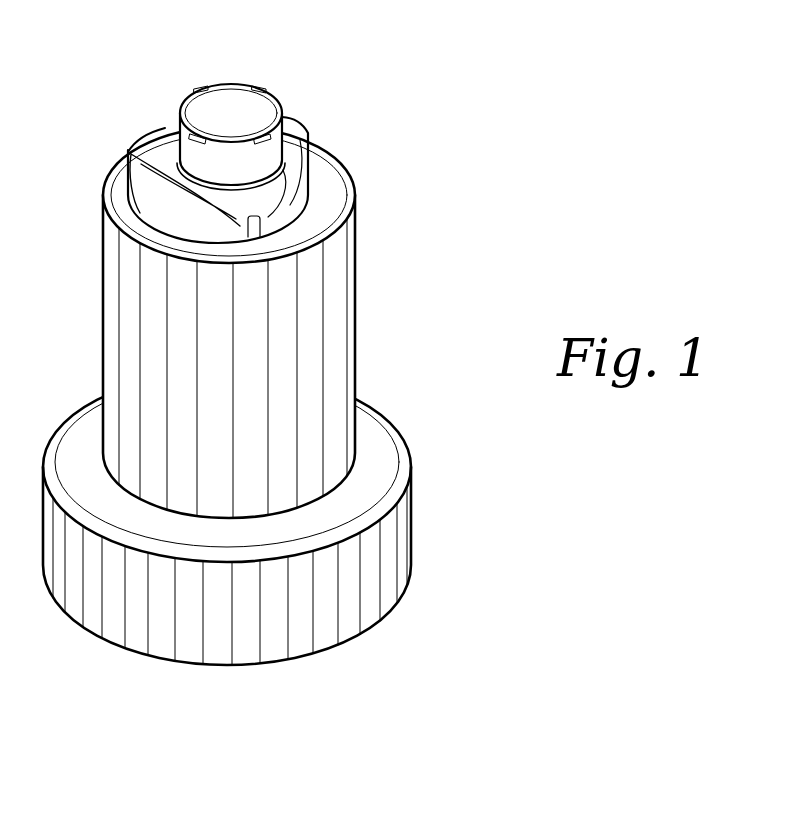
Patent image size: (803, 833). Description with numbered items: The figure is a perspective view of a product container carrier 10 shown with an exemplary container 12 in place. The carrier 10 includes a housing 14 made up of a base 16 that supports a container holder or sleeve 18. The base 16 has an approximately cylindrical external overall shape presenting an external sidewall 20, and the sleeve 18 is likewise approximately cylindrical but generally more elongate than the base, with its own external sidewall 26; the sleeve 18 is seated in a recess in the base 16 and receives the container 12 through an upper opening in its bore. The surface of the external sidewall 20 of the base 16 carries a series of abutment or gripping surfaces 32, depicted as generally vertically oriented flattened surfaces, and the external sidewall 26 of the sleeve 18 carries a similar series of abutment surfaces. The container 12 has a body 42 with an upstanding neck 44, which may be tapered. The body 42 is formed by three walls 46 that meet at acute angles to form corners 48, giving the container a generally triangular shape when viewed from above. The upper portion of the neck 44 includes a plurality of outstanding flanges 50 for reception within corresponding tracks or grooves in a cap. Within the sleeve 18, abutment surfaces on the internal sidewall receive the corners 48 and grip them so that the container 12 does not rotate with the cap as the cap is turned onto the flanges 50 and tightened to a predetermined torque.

The product container carrier 10 is at (483, 122).
The container 12 is at (298, 200).
The housing 14 is at (428, 323).
The base 16 is at (417, 495).
The sleeve 18 is at (100, 315).
The external sidewall 20 is at (413, 555).
The external sidewall 26 is at (353, 270).
The abutment surfaces 32 is at (138, 643).
The body 42 is at (295, 128).
The neck 44 is at (192, 150).
The walls 46 is at (148, 203).
The corners 48 is at (132, 152).
The flanges 50 is at (262, 83).